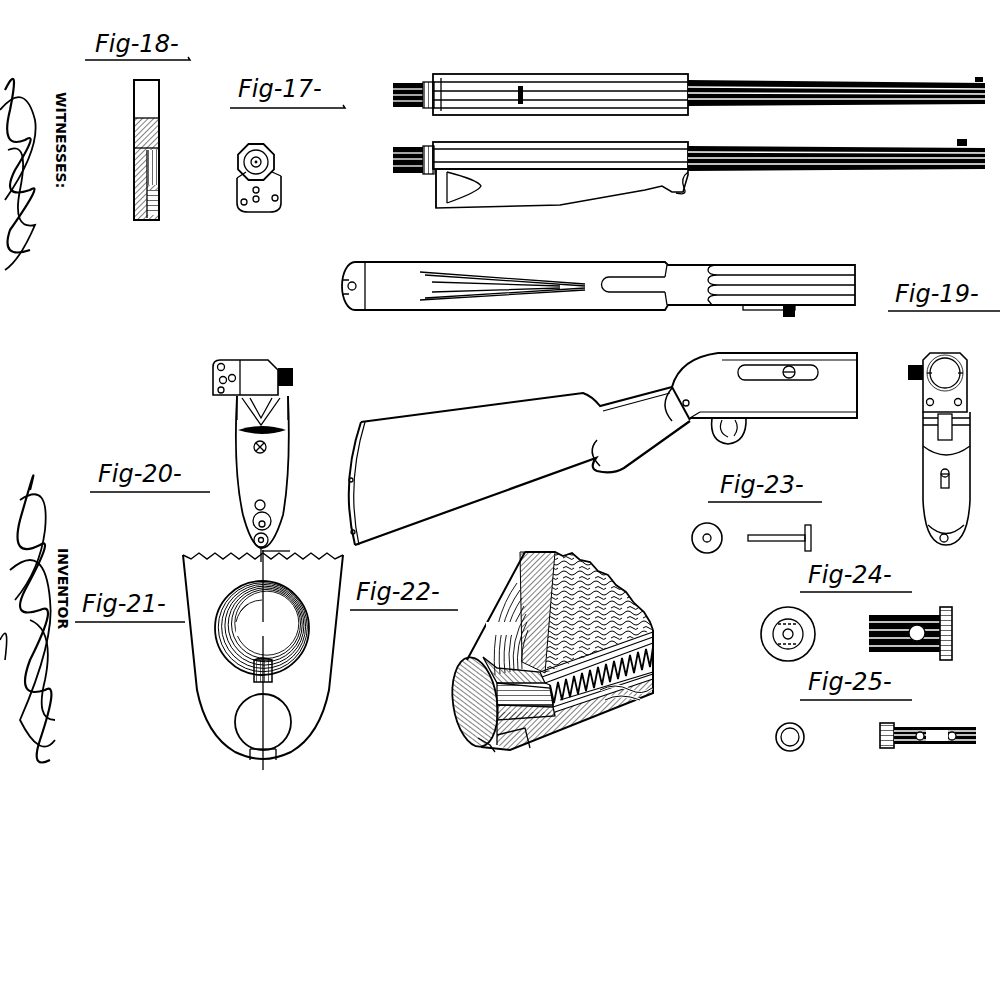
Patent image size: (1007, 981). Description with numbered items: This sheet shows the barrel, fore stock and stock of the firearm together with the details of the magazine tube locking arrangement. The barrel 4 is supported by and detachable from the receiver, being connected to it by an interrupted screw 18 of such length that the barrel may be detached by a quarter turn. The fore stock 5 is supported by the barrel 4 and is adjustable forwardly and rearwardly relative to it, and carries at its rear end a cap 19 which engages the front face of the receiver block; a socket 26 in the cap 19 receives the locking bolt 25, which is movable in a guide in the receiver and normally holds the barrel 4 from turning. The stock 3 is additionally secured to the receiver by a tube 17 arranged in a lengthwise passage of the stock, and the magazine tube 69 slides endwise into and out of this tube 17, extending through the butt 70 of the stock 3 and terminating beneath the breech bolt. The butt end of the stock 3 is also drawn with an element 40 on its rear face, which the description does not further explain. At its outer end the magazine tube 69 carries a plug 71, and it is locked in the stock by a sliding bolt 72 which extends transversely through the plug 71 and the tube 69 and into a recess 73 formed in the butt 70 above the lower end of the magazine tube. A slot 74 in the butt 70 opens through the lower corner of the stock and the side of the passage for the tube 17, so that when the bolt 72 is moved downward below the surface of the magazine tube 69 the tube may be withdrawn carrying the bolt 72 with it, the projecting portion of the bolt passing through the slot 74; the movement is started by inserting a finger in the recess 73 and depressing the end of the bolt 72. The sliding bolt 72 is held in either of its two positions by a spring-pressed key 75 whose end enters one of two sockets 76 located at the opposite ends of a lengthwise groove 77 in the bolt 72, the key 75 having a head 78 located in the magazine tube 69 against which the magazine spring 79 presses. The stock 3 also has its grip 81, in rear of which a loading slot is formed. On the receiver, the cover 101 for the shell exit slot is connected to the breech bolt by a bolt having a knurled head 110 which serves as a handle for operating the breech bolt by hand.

In FIG. 20, the stock 3 is at (268, 479).
In FIG. 21, the stock 3 is at (198, 652).
In FIG. 22, the stock 3 is at (525, 552).
In FIG. 23, the stock 3 is at (603, 449).
In FIG. 17, the barrel 4 is at (268, 152).
In FIG. 19, the barrel 4 is at (782, 82).
In FIG. 19, the fore stock 5 is at (598, 244).
In FIG. 22, the tube 17 is at (653, 636).
In FIG. 17, the interrupted screw 18 is at (240, 178).
In FIG. 19, the interrupted screw 18 is at (426, 82).
In FIG. 18, the cap 19 is at (138, 210).
In FIG. 19, the cap 19 is at (436, 192).
In FIG. 19, the locking bolt 25 is at (962, 404).
In FIG. 17, the socket 26 is at (240, 202).
In FIG. 20, the socket 26 is at (215, 370).
In FIG. 20, the butt plate screw 40 is at (250, 490).
In FIG. 23, the butt plate screw 40 is at (352, 474).
In FIG. 22, the magazine tube 69 is at (655, 668).
In FIG. 21, the butt 70 is at (208, 690).
In FIG. 22, the butt 70 is at (458, 680).
In FIG. 20, the plug 71 is at (254, 542).
In FIG. 21, the plug 71 is at (263, 722).
In FIG. 22, the plug 71 is at (462, 716).
In FIG. 24, the plug 71 is at (803, 633).
In FIG. 20, the sliding bolt 72 is at (258, 527).
In FIG. 21, the sliding bolt 72 is at (257, 662).
In FIG. 22, the sliding bolt 72 is at (500, 753).
In FIG. 25, the sliding bolt 72 is at (790, 751).
In FIG. 20, the recess 73 is at (253, 521).
In FIG. 21, the recess 73 is at (262, 628).
In FIG. 21, the slot 74 is at (253, 760).
In FIG. 22, the slot 74 is at (482, 752).
In FIG. 22, the spring-pressed key 75 is at (530, 715).
In FIG. 23, the spring-pressed key 75 is at (702, 544).
In FIG. 22, the sockets 76 is at (470, 660).
In FIG. 25, the sockets 76 is at (940, 746).
In FIG. 22, the lengthwise groove 77 is at (463, 732).
In FIG. 25, the lengthwise groove 77 is at (936, 728).
In FIG. 22, the head 78 is at (565, 702).
In FIG. 23, the head 78 is at (717, 530).
In FIG. 22, the magazine spring 79 is at (605, 686).
In FIG. 23, the grip 81 is at (618, 472).
In FIG. 19, the cover 101 is at (752, 310).
In FIG. 23, the cover 101 is at (752, 377).
In FIG. 19, the knurled head 110 is at (795, 312).
In FIG. 23, the knurled head 110 is at (791, 366).